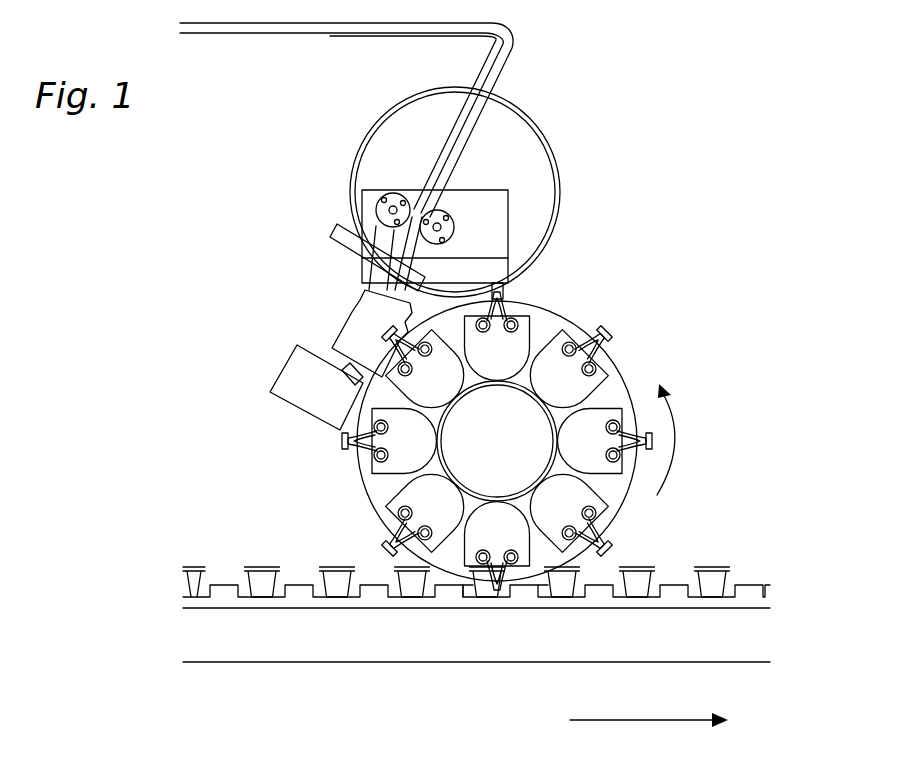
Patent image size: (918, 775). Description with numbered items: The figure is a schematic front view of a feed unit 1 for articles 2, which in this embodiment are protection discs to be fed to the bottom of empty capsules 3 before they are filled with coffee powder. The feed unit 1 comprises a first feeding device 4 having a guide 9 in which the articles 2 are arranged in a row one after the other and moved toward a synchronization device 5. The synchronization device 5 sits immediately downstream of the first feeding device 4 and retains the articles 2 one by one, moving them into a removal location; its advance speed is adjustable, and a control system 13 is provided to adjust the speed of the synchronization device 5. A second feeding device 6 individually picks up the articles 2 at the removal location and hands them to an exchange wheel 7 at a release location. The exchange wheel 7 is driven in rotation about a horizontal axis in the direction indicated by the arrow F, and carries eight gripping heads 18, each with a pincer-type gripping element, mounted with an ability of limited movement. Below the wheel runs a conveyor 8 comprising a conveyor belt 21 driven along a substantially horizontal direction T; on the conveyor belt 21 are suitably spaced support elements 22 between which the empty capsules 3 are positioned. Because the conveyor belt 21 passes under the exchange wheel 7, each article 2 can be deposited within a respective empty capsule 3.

The feed unit 1 is at (592, 257).
The articles 2 is at (450, 426).
The capsules 3 is at (262, 578).
The first feeding device 4 is at (492, 96).
The synchronization device 5 is at (368, 222).
The second feeding device 6 is at (358, 322).
The exchange wheel 7 is at (337, 443).
The conveyor 8 is at (196, 632).
The guide 9 is at (383, 130).
The control system 13 is at (482, 218).
The gripping heads 18 is at (568, 379).
The conveyor belt 21 is at (662, 600).
The support elements 22 is at (466, 588).
The direction of rotation F is at (678, 416).
The horizontal direction T is at (632, 720).